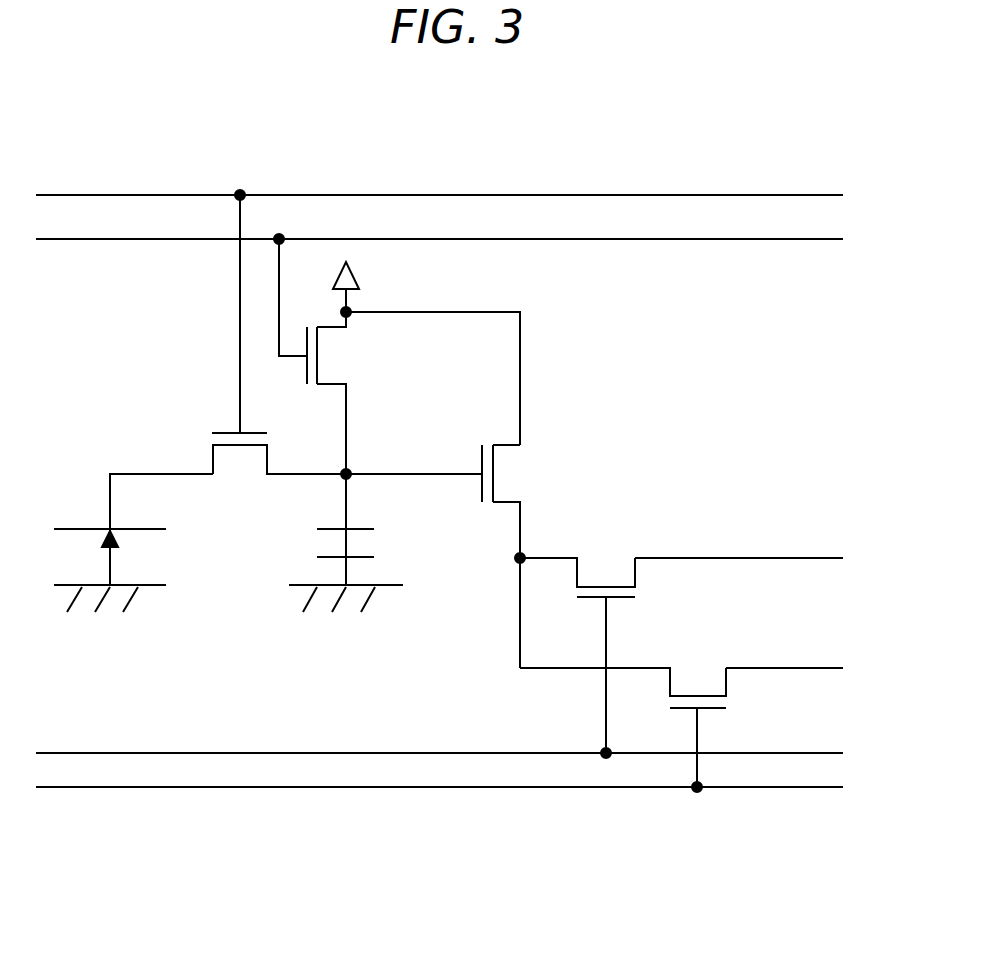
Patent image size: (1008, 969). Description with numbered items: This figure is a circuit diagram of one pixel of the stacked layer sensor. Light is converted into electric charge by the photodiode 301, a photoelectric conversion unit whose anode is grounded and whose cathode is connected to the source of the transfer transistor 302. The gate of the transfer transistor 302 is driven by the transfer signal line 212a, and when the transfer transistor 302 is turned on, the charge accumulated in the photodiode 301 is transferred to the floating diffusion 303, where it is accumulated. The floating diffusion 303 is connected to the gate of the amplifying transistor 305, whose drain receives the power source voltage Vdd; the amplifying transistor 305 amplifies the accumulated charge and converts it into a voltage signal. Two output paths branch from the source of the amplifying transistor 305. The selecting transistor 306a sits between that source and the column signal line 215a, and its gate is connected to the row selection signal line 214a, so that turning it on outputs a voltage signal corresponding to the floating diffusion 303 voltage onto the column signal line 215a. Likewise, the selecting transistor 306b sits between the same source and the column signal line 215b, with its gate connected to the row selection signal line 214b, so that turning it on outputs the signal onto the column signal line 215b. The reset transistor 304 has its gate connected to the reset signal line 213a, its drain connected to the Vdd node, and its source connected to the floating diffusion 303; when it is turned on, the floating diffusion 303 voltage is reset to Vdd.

The transfer signal line 212a is at (788, 195).
The reset signal line 213a is at (789, 241).
The row selection signal line 214a is at (826, 753).
The row selection signal line 214b is at (829, 789).
The column signal line 215a is at (795, 558).
The column signal line 215b is at (799, 668).
The photodiode 301 is at (78, 528).
The transfer transistor 302 is at (213, 432).
The floating diffusion 303 is at (316, 556).
The reset transistor 304 is at (322, 390).
The amplifying transistor 305 is at (495, 505).
The selecting transistor 306a is at (640, 575).
The selecting transistor 306b is at (732, 685).